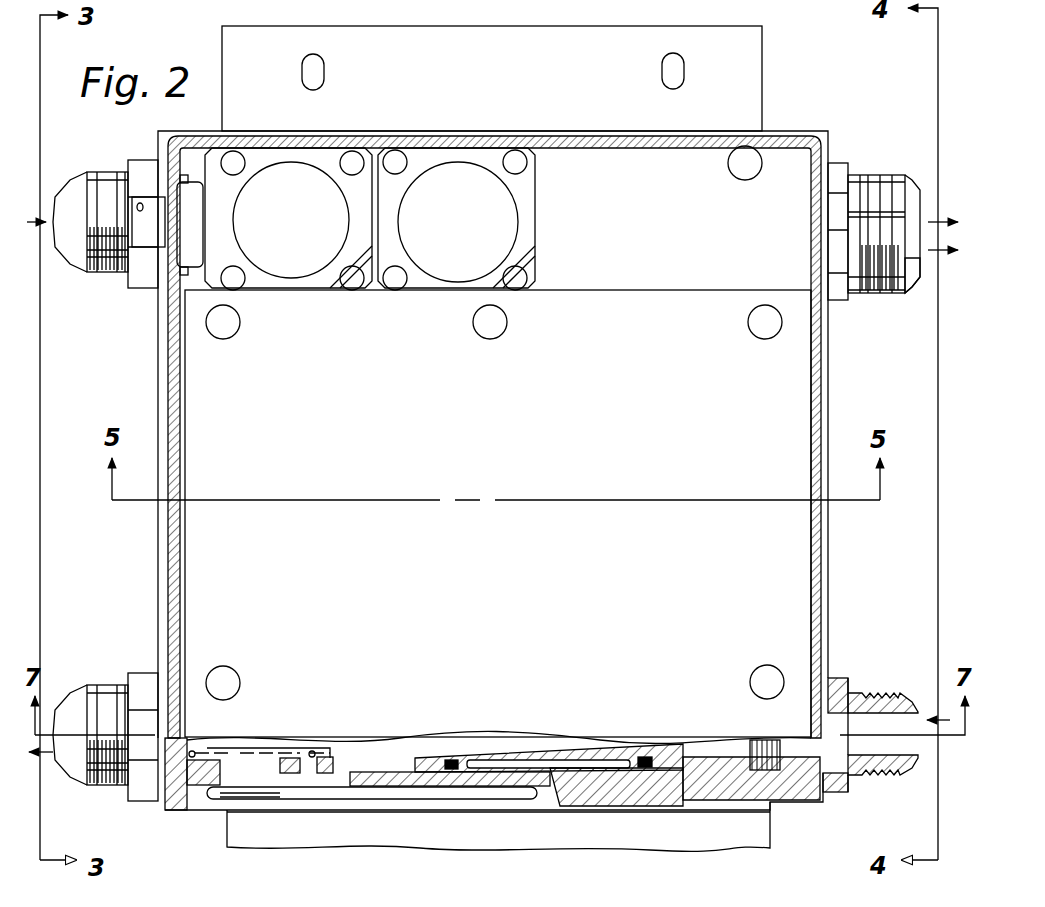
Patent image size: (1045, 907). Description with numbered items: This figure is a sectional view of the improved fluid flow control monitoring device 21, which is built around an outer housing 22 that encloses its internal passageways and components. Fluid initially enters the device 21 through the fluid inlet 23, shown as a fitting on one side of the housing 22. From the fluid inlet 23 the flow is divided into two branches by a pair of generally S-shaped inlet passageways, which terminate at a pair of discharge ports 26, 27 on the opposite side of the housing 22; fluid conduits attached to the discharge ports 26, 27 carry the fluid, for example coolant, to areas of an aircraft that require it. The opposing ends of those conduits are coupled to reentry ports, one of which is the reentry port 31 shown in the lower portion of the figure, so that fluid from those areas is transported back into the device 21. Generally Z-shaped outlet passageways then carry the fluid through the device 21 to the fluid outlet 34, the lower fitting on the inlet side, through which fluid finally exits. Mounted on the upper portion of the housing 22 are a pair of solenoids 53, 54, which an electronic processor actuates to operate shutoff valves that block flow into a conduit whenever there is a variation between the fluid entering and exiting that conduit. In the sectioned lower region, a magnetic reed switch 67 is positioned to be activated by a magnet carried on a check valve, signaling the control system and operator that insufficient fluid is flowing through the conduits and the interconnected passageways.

The fluid flow control monitoring device 21 is at (794, 121).
The outer housing 22 is at (824, 577).
The fluid inlet 23 is at (49, 200).
The discharge port 26 is at (922, 190).
The discharge port 27 is at (916, 270).
The reentry port 31 is at (906, 723).
The fluid outlet 34 is at (53, 713).
The solenoid 53 is at (456, 219).
The solenoid 54 is at (288, 219).
The magnetic reed switch 67 is at (332, 810).